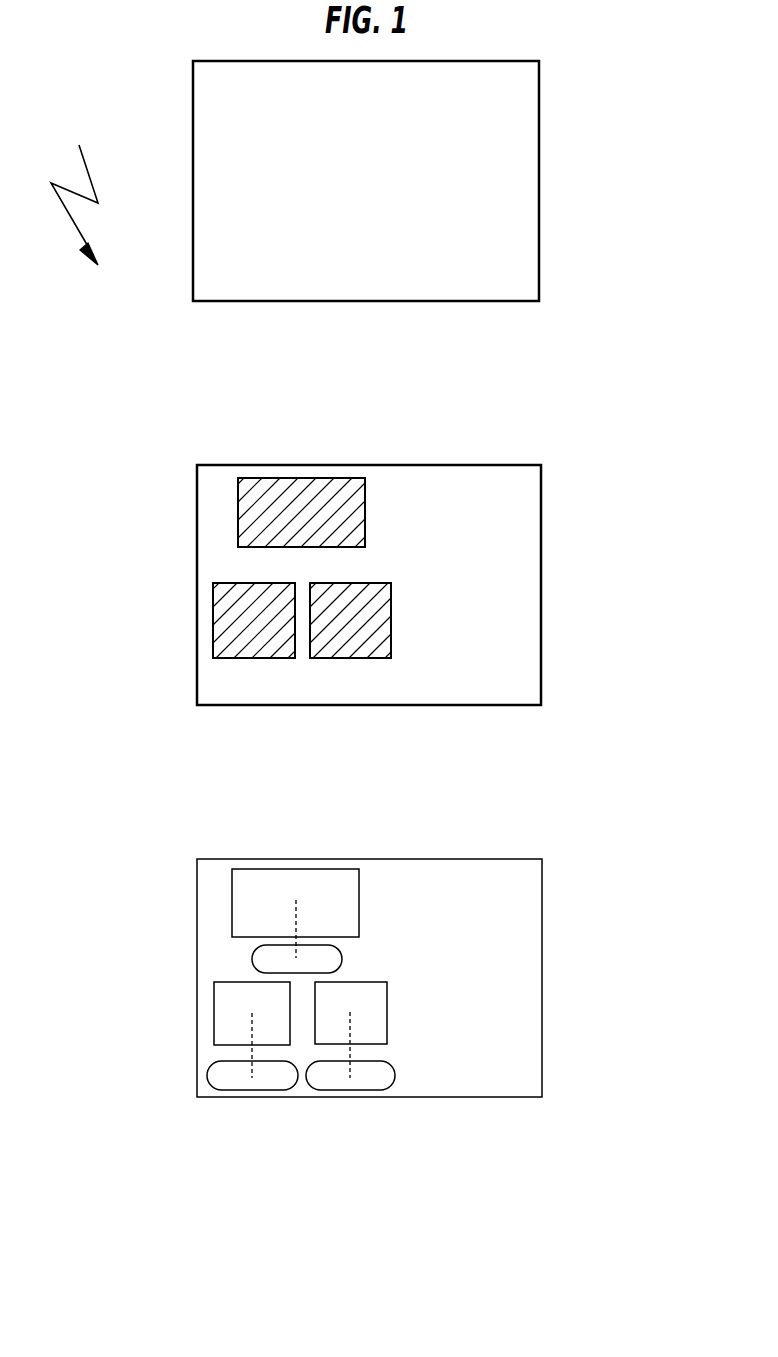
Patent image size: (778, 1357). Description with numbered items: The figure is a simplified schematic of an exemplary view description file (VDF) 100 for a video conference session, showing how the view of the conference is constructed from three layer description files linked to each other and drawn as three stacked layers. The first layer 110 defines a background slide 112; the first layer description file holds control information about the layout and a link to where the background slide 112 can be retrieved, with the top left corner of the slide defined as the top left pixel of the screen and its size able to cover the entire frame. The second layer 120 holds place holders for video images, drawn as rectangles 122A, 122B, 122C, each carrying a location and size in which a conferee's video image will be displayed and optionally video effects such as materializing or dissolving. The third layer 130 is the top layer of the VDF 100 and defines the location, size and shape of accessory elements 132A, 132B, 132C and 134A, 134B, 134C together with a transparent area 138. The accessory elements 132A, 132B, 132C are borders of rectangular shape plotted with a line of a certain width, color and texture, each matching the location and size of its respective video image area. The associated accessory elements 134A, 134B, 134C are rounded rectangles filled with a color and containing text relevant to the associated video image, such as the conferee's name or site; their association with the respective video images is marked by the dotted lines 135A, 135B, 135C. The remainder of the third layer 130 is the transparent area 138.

The view description file 100 is at (74, 181).
The first layer 110 is at (540, 230).
The background slide 112 is at (500, 162).
The second layer 120 is at (541, 585).
The video image rectangle 122A is at (277, 479).
The video image rectangle 122B is at (214, 630).
The video image rectangle 122C is at (352, 655).
The third layer 130 is at (542, 978).
The accessory element 132A is at (297, 868).
The accessory element 132B is at (215, 1013).
The accessory element 132C is at (387, 1012).
The associated accessory element 134A is at (253, 958).
The associated accessory element 134B is at (207, 1077).
The associated accessory element 134C is at (350, 1090).
The dotted line 135A is at (297, 922).
The dotted line 135B is at (255, 1030).
The dotted line 135C is at (350, 1035).
The transparent area 138 is at (220, 893).